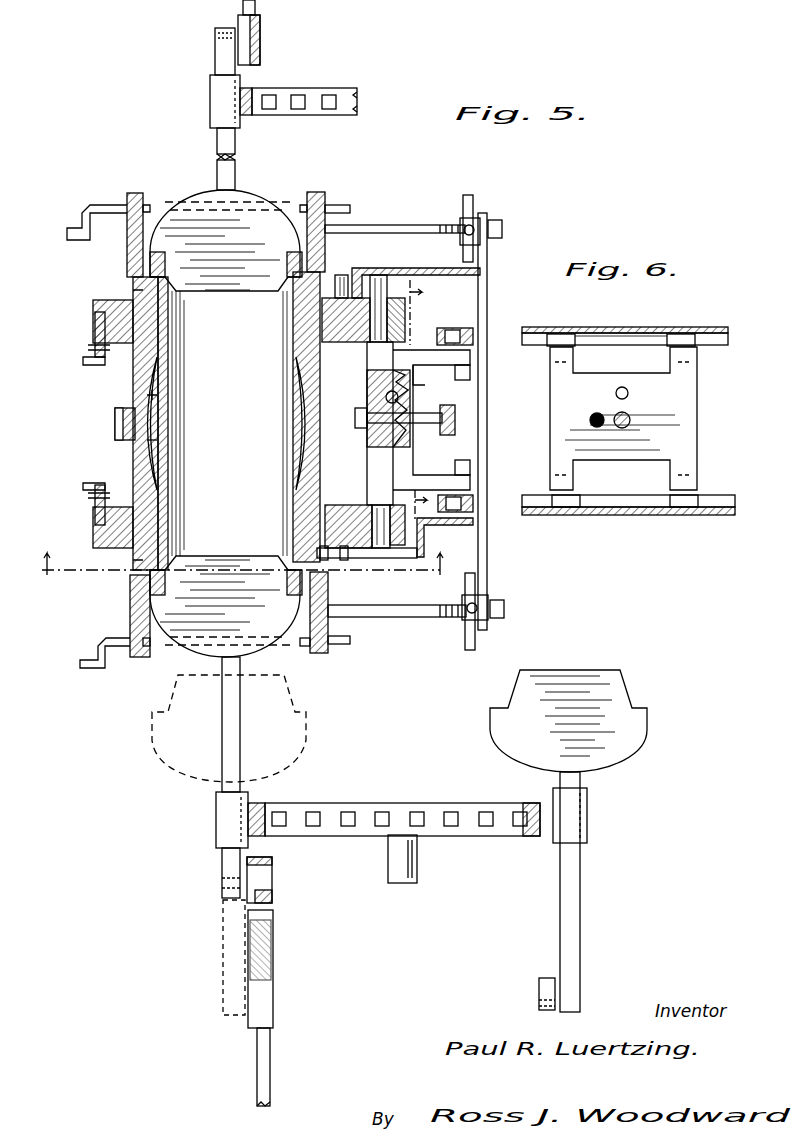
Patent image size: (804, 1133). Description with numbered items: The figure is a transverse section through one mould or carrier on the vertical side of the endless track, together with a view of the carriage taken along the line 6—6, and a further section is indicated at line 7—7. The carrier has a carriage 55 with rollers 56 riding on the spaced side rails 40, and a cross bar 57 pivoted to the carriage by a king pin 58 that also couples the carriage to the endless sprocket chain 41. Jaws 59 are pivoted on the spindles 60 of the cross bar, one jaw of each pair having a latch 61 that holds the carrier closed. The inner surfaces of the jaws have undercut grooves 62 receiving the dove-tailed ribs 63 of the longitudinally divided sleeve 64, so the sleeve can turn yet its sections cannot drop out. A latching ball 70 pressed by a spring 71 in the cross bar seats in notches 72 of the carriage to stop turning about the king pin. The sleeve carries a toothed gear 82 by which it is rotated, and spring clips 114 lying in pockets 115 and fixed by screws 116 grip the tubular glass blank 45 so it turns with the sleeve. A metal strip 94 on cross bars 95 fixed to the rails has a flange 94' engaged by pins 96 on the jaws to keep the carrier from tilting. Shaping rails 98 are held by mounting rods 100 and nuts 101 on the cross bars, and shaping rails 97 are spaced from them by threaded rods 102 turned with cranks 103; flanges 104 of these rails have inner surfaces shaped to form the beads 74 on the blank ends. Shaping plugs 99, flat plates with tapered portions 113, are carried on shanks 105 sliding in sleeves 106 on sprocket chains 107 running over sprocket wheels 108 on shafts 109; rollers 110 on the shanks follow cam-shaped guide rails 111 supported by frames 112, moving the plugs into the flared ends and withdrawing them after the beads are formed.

In FIG. 5, the section line 6— 6 is at (413, 397).
In FIG. 5, the section line 7— 7 is at (242, 567).
In FIG. 5, the side rails 40 is at (440, 328).
In FIG. 6, the side rails 40 is at (712, 327).
In FIG. 5, the sprocket chain 41 is at (450, 405).
In FIG. 5, the tubular blank 45 is at (150, 345).
In FIG. 5, the carriage 55 is at (405, 450).
In FIG. 6, the carriage 55 is at (680, 425).
In FIG. 5, the rollers 56 is at (452, 330).
In FIG. 6, the rollers 56 is at (680, 327).
In FIG. 5, the cross bar 57 is at (367, 362).
In FIG. 5, the king pin 58 is at (405, 432).
In FIG. 6, the king pin 58 is at (630, 413).
In FIG. 5, the jaws 59 is at (345, 340).
In FIG. 5, the spindles 60 is at (378, 275).
In FIG. 5, the latch 61 is at (85, 358).
In FIG. 5, the undercut grooves 62 is at (133, 292).
In FIG. 5, the dove-tailed ribs 63 is at (93, 310).
In FIG. 5, the longitudinally divided sleeves 64 is at (133, 480).
In FIG. 5, the latching ball 70 is at (418, 382).
In FIG. 5, the spring 71 is at (370, 392).
In FIG. 5, the notches 72 is at (402, 397).
In FIG. 6, the notches 72 is at (615, 393).
In FIG. 5, the beads 74 is at (293, 258).
In FIG. 5, the gear 82 is at (115, 424).
In FIG. 5, the metal strip 94 is at (416, 270).
In FIG. 5, the flange 94' is at (346, 270).
In FIG. 5, the cross bars 95 is at (487, 278).
In FIG. 5, the pins 96 is at (293, 305).
In FIG. 5, the shaping rails 97 is at (134, 193).
In FIG. 5, the shaping rails 98 is at (318, 192).
In FIG. 5, the shaping plugs 99 is at (245, 198).
In FIG. 5, the mounting rods 100 is at (400, 220).
In FIG. 5, the nuts 101 is at (473, 220).
In FIG. 5, the threaded rods 102 is at (338, 205).
In FIG. 5, the turning cranks 103 is at (70, 225).
In FIG. 5, the flanges 104 is at (200, 262).
In FIG. 5, the shanks 105 is at (217, 142).
In FIG. 5, the sleeves 106 is at (210, 104).
In FIG. 5, the sprocket chains 107 is at (252, 88).
In FIG. 5, the sprocket wheels 108 is at (335, 93).
In FIG. 5, the shafts 109 is at (408, 868).
In FIG. 5, the rollers 110 is at (260, 30).
In FIG. 5, the guide rails 111 is at (262, 48).
In FIG. 5, the frames 112 is at (255, 10).
In FIG. 5, the tapered portions 113 is at (210, 285).
In FIG. 5, the spring clips 114 is at (150, 445).
In FIG. 5, the pockets 115 is at (148, 380).
In FIG. 5, the screws 116 is at (150, 420).